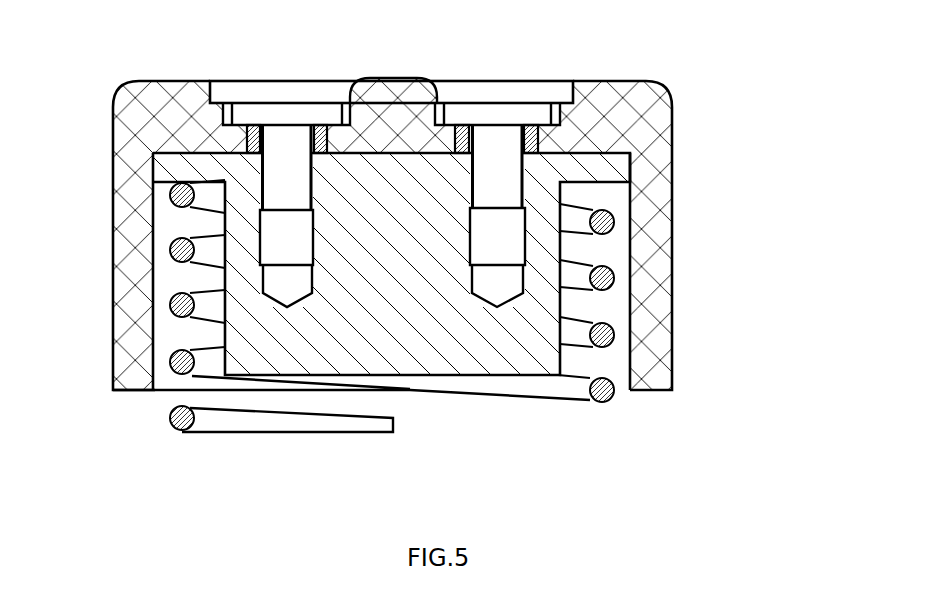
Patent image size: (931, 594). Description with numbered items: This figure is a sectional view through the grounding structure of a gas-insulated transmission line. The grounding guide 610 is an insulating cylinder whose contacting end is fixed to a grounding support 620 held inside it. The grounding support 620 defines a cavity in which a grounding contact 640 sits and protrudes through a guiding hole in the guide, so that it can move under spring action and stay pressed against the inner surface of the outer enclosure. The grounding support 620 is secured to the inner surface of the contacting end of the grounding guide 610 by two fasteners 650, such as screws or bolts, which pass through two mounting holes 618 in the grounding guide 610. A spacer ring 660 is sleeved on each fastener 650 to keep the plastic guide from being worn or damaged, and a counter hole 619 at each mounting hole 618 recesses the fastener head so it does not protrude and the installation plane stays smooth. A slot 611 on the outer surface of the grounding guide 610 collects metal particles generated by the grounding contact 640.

The grounding guide 610 is at (630, 130).
The slot 611 is at (493, 95).
The mounting hole 618 is at (560, 137).
The counter hole 619 is at (228, 102).
The grounding support 620 is at (450, 345).
The grounding contact 640 is at (395, 95).
The fastener 650 is at (285, 173).
The spacer ring 660 is at (455, 130).